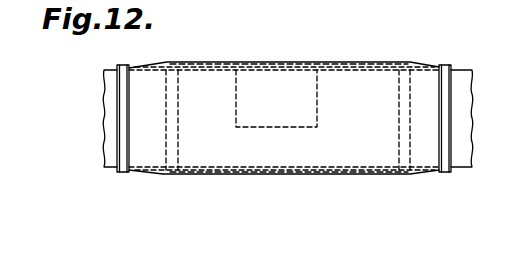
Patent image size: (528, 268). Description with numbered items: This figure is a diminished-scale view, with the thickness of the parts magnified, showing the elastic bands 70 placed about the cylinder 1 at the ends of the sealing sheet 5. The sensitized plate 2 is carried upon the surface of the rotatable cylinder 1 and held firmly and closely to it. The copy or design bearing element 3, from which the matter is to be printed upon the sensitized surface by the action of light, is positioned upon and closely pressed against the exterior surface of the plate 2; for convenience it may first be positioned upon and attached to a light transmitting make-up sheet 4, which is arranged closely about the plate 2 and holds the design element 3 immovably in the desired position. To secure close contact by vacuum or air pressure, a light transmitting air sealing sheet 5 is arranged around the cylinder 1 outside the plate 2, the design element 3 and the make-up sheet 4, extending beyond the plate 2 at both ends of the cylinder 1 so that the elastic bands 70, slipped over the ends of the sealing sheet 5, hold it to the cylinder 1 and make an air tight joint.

The rotatable cylinder 1 is at (46, 97).
The sensitized plate 2 is at (215, 70).
The design bearing element 3 is at (318, 82).
The make-up sheet 4 is at (201, 64).
The sealing sheet 5 is at (255, 63).
The elastic bands 70 is at (118, 172).